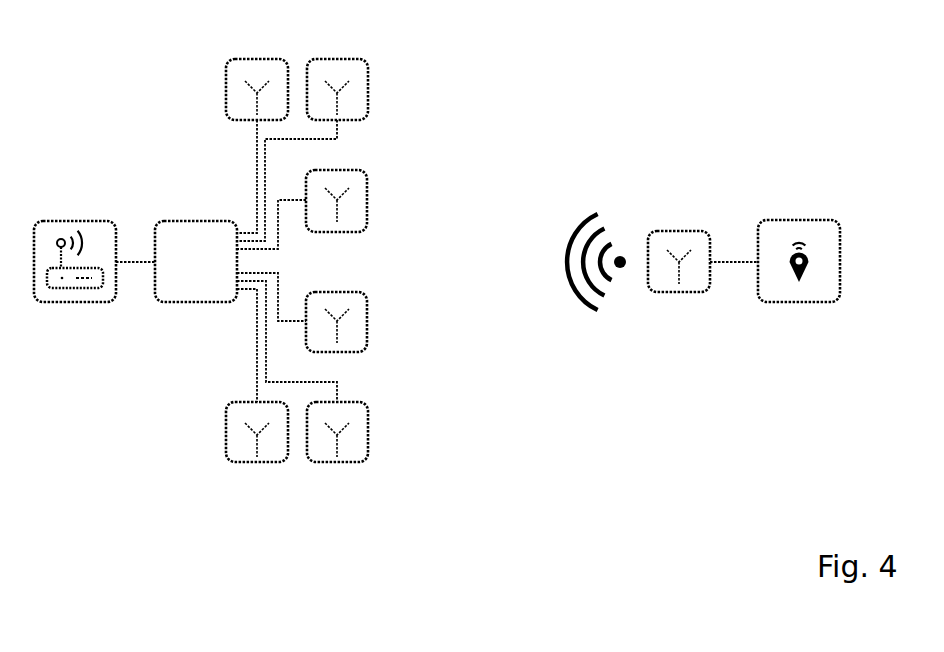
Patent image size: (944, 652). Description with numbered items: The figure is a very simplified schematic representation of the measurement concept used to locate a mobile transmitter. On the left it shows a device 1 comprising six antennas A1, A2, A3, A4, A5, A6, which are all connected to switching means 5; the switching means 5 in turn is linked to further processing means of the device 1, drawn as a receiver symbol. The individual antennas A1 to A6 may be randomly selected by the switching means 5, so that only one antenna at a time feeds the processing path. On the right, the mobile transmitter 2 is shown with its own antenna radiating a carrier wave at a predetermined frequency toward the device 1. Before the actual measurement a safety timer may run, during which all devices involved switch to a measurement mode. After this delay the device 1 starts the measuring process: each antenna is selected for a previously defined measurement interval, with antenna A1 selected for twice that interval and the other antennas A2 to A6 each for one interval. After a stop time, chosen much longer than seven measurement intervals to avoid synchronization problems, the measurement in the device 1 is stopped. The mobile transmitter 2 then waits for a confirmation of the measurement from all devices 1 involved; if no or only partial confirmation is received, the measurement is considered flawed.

The device 1 is at (261, 260).
The mobile transmitter 2 is at (658, 169).
The switching means 5 is at (196, 261).
The antenna A1 is at (302, 194).
The antenna A2 is at (302, 308).
The antenna A3 is at (302, 136).
The antenna A4 is at (302, 385).
The antenna A5 is at (257, 132).
The antenna A6 is at (257, 389).